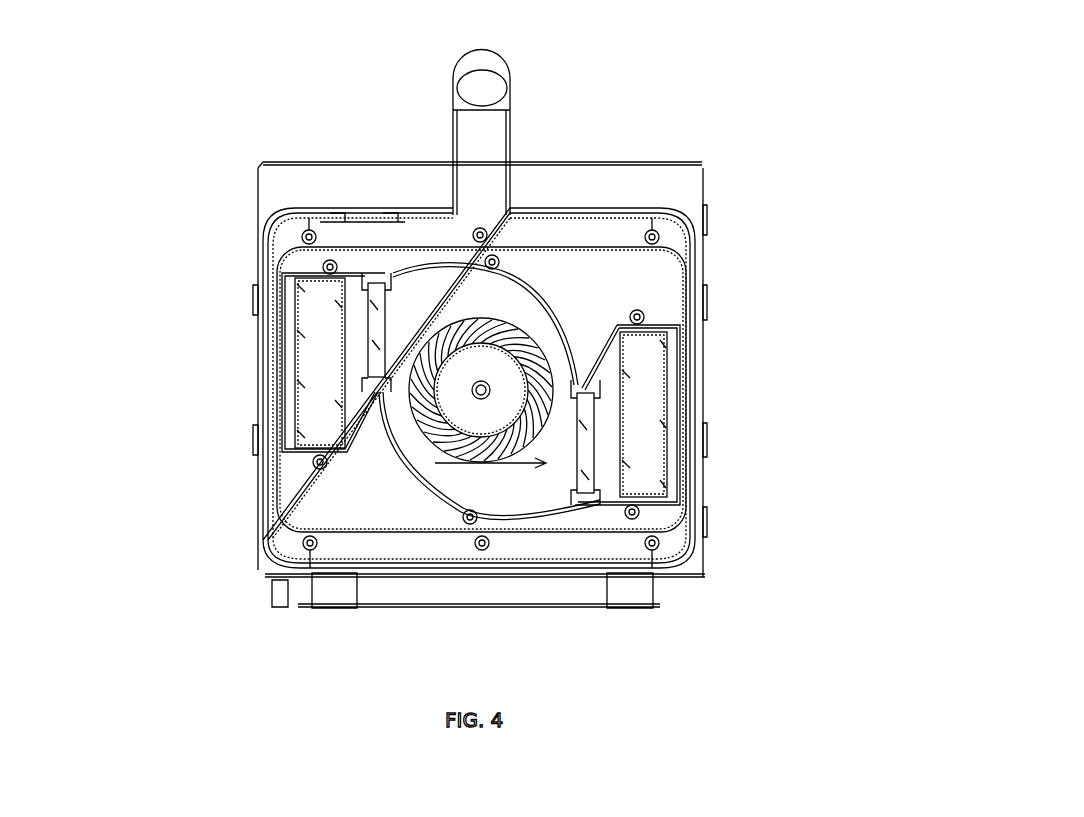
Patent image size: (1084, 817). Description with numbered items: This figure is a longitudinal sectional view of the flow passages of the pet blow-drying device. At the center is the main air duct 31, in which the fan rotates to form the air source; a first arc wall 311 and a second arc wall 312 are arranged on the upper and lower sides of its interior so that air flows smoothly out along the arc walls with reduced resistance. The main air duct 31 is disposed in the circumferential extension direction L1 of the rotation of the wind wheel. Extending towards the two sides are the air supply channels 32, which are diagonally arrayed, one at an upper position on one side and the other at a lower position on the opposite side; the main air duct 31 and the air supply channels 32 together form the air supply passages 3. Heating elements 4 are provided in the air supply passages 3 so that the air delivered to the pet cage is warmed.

The air supply passage 3 is at (310, 400).
The main air duct 31 is at (585, 361).
The air supply channel 32 is at (313, 318).
The first arc wall 311 is at (522, 306).
The second arc wall 312 is at (480, 515).
The heating element 4 is at (375, 343).
The circumferential extension direction L1 is at (458, 462).